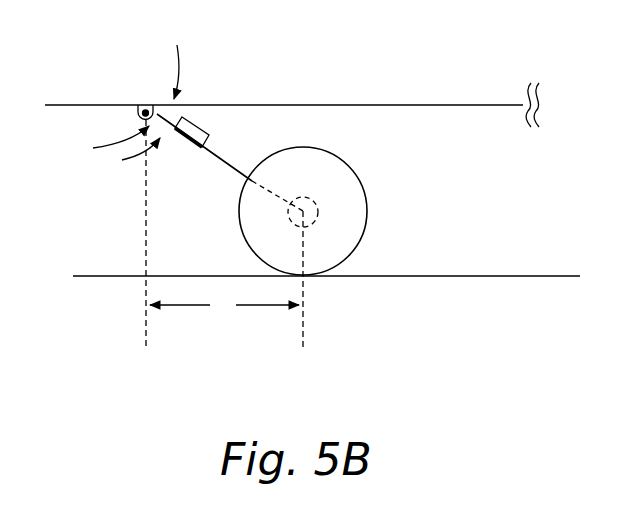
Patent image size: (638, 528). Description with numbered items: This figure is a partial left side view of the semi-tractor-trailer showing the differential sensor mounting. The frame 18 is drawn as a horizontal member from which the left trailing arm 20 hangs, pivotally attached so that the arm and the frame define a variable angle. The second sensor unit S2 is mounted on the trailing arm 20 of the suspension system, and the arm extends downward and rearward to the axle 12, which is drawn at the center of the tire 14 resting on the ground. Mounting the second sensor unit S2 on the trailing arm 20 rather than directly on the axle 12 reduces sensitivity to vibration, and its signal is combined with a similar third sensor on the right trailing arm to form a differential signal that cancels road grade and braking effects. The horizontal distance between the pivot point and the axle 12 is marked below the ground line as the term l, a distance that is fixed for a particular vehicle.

The axle 12 is at (312, 218).
The tires 14 is at (362, 183).
The frame 18 is at (397, 105).
The trailing arm 20 is at (230, 162).
The second sensor unit S2 is at (197, 127).
The horizontal distance l is at (221, 315).